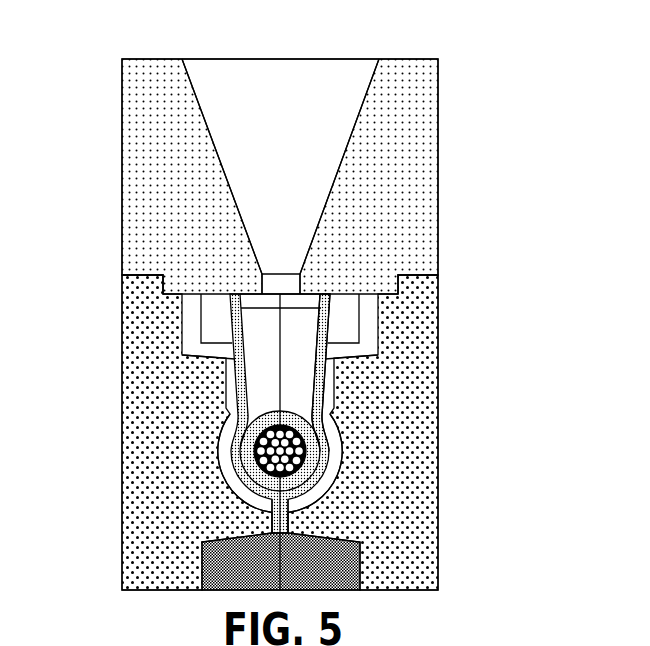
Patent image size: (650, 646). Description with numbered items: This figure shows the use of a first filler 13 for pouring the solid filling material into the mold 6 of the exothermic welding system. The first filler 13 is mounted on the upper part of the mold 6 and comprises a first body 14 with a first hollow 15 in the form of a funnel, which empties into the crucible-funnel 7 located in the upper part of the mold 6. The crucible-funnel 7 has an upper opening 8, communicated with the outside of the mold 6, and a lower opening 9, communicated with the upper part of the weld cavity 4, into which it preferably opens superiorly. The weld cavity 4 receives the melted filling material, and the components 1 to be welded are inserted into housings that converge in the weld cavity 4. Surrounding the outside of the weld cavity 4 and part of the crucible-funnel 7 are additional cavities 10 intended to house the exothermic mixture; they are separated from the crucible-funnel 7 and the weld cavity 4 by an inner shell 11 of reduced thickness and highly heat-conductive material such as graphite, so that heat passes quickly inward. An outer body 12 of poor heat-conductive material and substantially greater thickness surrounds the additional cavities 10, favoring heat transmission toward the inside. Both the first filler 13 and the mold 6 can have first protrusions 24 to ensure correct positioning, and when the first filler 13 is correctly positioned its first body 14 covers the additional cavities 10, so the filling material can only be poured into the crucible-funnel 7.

The component 1 is at (307, 455).
The weld cavity 4 is at (302, 477).
The mold 6 is at (446, 357).
The crucible-funnel 7 is at (260, 368).
The upper opening 8 is at (253, 302).
The lower opening 9 is at (263, 415).
The additional cavity 10 is at (233, 483).
The inner shell 11 is at (320, 381).
The outer body 12 is at (155, 353).
The first filler 13 is at (253, 80).
The first body 14 is at (402, 122).
The first hollow 15 is at (232, 117).
The first protrusion 24 is at (135, 292).